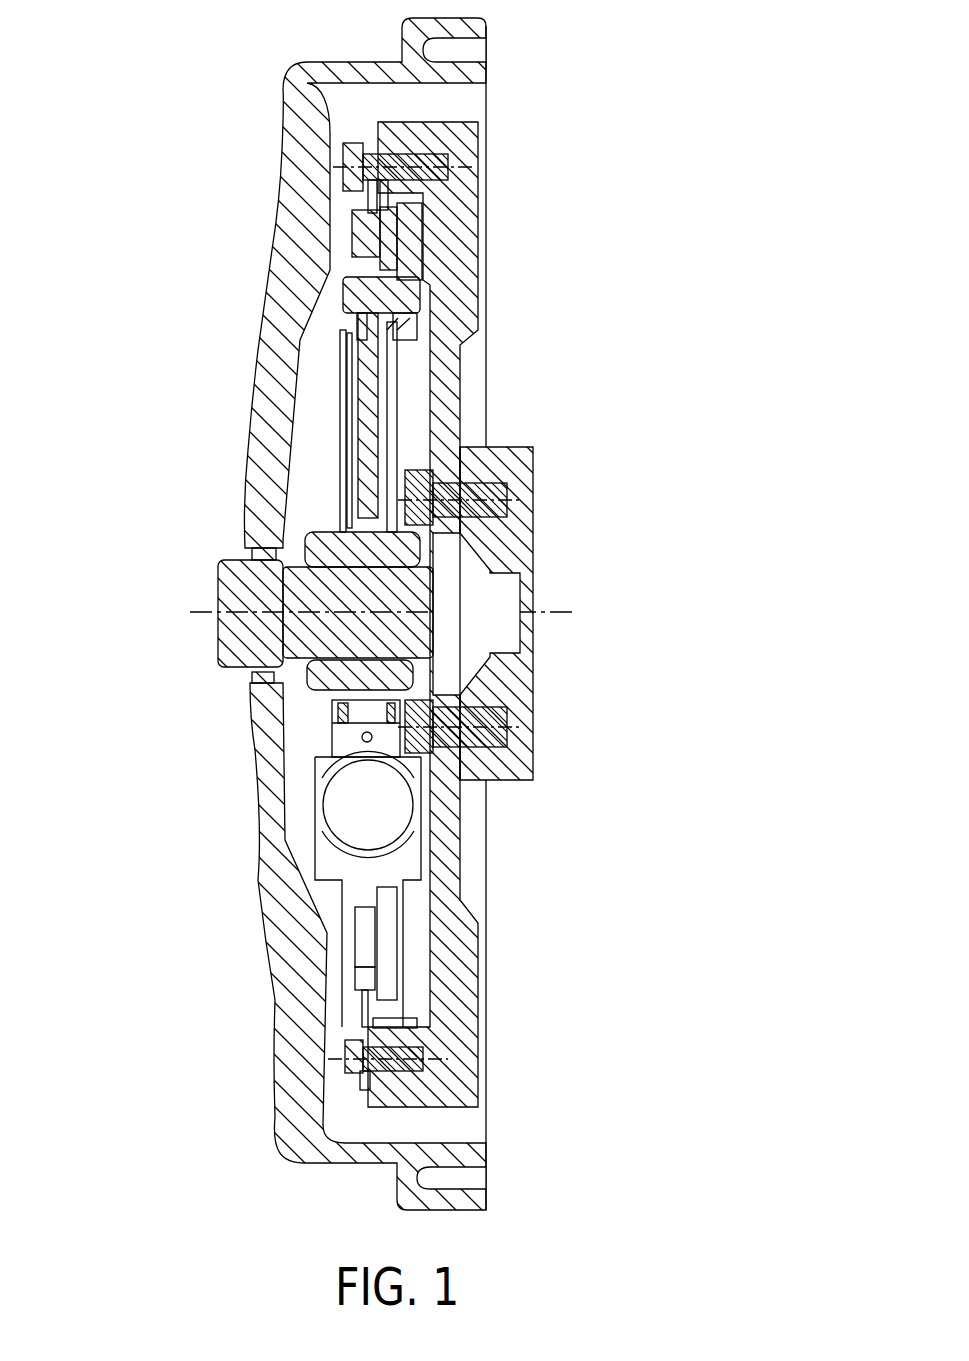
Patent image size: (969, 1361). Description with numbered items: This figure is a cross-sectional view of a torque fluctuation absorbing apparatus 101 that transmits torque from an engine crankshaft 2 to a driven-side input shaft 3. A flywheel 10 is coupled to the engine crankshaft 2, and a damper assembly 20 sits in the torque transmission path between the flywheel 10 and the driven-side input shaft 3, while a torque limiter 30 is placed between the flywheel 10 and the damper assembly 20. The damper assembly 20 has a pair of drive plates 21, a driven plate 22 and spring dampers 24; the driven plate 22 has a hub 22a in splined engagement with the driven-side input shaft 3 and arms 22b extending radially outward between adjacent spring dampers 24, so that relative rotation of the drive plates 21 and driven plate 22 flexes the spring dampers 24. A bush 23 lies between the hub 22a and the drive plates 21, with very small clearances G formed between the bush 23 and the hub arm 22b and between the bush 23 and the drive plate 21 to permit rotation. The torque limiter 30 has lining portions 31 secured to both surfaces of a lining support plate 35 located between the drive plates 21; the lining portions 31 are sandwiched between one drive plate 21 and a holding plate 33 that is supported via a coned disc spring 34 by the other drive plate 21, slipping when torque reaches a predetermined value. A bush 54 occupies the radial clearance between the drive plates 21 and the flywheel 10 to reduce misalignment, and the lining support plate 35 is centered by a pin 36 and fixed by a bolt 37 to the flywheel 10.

The torque fluctuation absorbing apparatus 101 is at (512, 80).
The flywheel 10 is at (467, 189).
The engine crankshaft 2 is at (518, 549).
The driven-side input shaft 3 is at (253, 637).
The damper assembly 20 is at (195, 385).
The drive plates 21 is at (392, 390).
The driven plate 22 is at (352, 338).
The hub 22a is at (345, 545).
The arms 22b is at (363, 461).
The bush 23 is at (430, 687).
The spring dampers 24 is at (357, 807).
The torque limiter 30 is at (173, 160).
The lining portions 31 is at (370, 240).
The holding plate 33 is at (400, 262).
The coned disc spring 34 is at (392, 227).
The lining support plate 35 is at (373, 147).
The pin 36 is at (403, 1070).
The bolt 37 is at (455, 158).
The bush 54 is at (383, 1026).
The clearances G is at (390, 712).